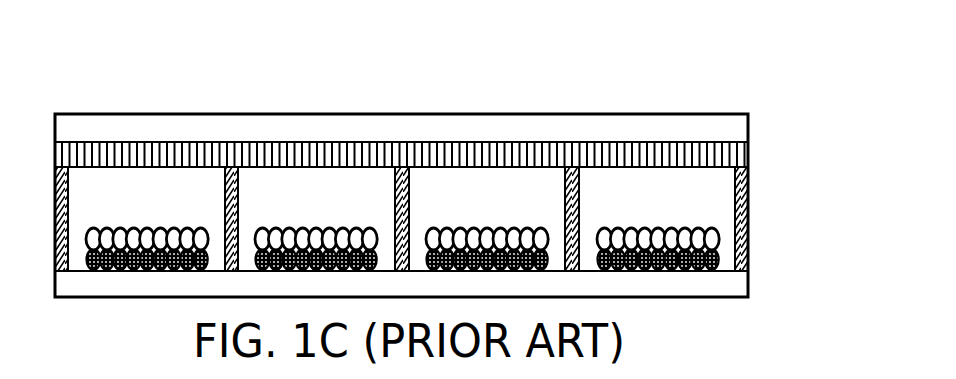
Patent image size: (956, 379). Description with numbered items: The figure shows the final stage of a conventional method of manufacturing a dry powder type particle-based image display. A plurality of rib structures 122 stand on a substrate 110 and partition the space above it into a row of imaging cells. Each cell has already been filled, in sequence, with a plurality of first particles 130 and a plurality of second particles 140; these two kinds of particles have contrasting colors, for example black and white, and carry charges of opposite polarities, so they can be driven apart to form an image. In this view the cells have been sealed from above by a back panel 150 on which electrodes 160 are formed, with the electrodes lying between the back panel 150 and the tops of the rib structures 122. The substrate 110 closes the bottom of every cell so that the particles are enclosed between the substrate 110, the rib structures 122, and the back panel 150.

The substrate 110 is at (742, 283).
The rib structures 122 is at (748, 190).
The first particles 130 is at (716, 236).
The second particles 140 is at (716, 257).
The back panel 150 is at (742, 128).
The electrodes 160 is at (742, 152).